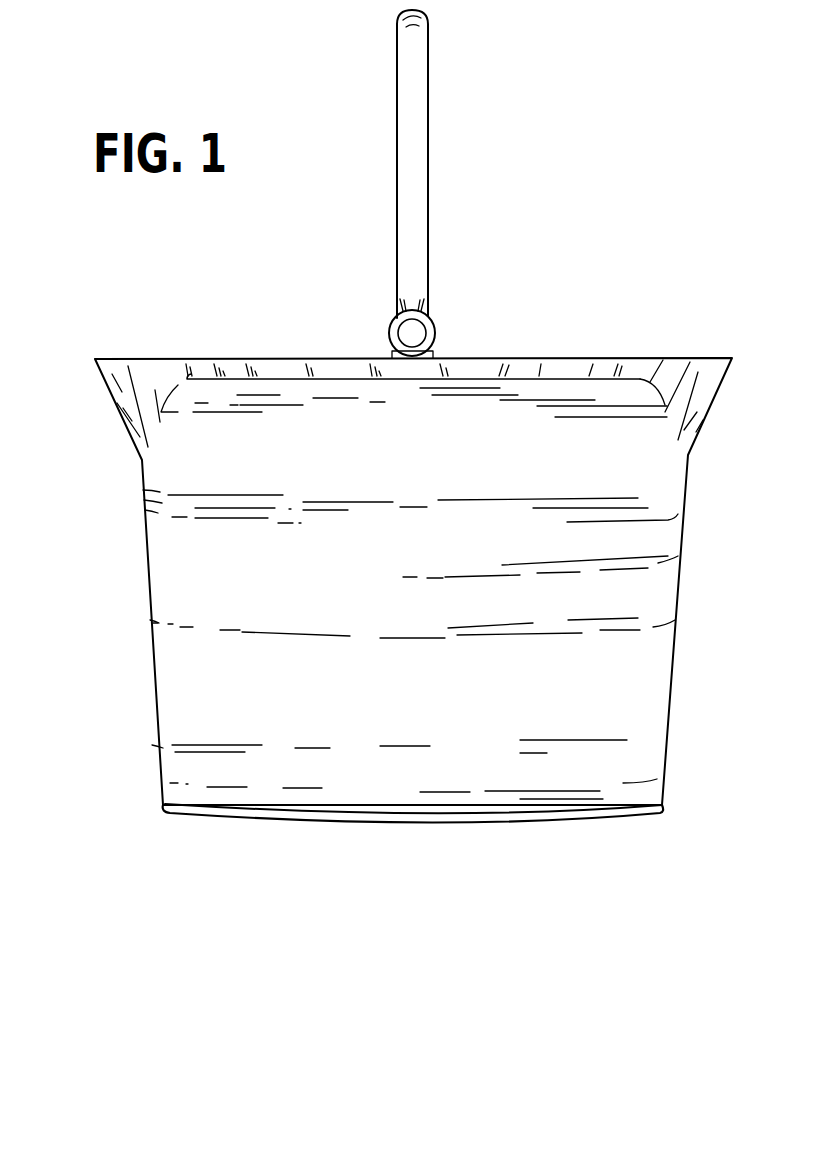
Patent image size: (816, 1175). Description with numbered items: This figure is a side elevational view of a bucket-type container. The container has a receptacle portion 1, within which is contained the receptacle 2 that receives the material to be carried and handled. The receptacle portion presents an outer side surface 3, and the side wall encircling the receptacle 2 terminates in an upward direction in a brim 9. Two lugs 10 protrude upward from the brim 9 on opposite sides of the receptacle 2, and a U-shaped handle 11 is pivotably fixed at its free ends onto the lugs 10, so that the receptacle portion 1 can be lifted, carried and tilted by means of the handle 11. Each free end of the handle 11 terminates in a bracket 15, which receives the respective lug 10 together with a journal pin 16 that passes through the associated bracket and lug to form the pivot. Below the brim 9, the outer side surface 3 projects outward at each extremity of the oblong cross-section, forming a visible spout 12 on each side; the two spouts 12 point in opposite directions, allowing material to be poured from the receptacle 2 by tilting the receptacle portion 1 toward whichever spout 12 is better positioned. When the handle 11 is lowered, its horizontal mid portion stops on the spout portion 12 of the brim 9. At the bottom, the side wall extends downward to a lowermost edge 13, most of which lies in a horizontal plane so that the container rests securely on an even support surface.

The receptacle portion 1 is at (90, 522).
The receptacle 2 is at (279, 455).
The outer side surface 3 is at (182, 562).
The brim 9 is at (535, 358).
The lug 10 is at (436, 354).
The handle 11 is at (430, 125).
The spout 12 is at (118, 373).
The lowermost edge 13 is at (274, 824).
The bracket 15 is at (434, 319).
The journal pin 16 is at (392, 326).